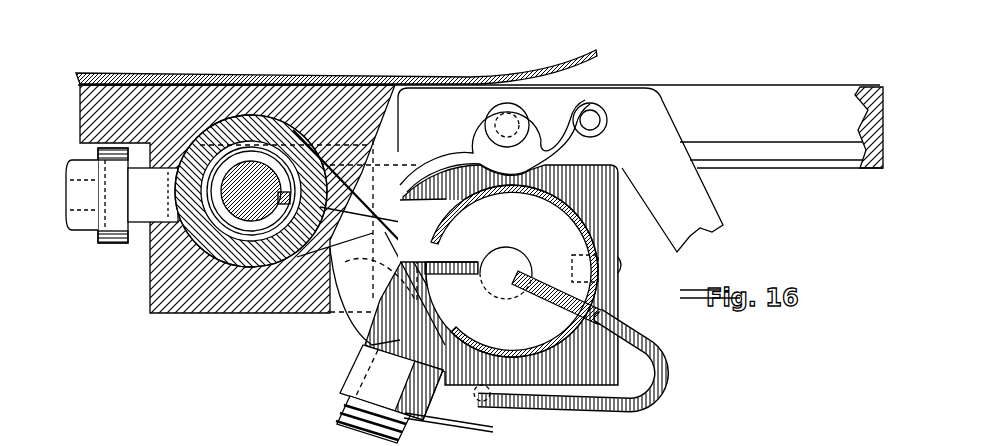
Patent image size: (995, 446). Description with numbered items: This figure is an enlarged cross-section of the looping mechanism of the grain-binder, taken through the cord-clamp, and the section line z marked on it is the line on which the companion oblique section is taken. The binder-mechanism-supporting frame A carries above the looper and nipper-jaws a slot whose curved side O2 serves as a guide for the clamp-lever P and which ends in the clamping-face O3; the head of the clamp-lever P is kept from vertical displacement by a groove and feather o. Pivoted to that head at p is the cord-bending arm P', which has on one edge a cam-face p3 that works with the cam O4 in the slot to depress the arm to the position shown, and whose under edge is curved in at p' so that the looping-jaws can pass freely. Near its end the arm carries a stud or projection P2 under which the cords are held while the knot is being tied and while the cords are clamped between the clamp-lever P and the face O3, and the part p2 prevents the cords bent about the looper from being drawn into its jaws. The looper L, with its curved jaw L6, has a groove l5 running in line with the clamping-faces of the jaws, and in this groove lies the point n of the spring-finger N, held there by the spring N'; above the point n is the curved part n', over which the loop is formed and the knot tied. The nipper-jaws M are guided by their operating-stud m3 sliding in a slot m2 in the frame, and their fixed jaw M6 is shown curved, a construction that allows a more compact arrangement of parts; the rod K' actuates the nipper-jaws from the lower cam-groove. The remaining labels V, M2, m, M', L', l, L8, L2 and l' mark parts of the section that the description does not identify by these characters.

The cover plate V is at (336, 67).
The binder-mechanism-supporting frame A is at (227, 199).
The curved side of slot O2 is at (480, 126).
The groove and feather o is at (771, 151).
The clamping-face O3 is at (288, 138).
The cam O4 is at (362, 92).
The section line z is at (90, 137).
The rod K' is at (97, 195).
The operating-stud m3 is at (153, 195).
The slot m2 is at (159, 195).
The nipper-jaws M is at (251, 230).
The bearing ring M2 is at (222, 236).
The bearing m is at (285, 238).
The lever arm M' is at (356, 196).
The fixed nipper jaw M6 is at (369, 220).
The stud or projection P2 is at (373, 275).
The cam-face p3 is at (327, 310).
The guard part p2 is at (360, 323).
The curved-in under edge p' is at (375, 164).
The blade L' is at (420, 288).
The casing l is at (499, 275).
The looper L is at (498, 271).
The arc band L8 is at (540, 206).
The looper jaw L6 is at (444, 242).
The hub L2 is at (506, 273).
The groove l5 is at (547, 300).
The point of spring-finger n is at (562, 336).
The curved part n' is at (600, 318).
The lug l' is at (604, 268).
The clamp-lever P is at (560, 170).
The cord-bending arm P' is at (495, 146).
The pivot p is at (546, 125).
The spring N' is at (414, 395).
The spring-finger N is at (568, 376).